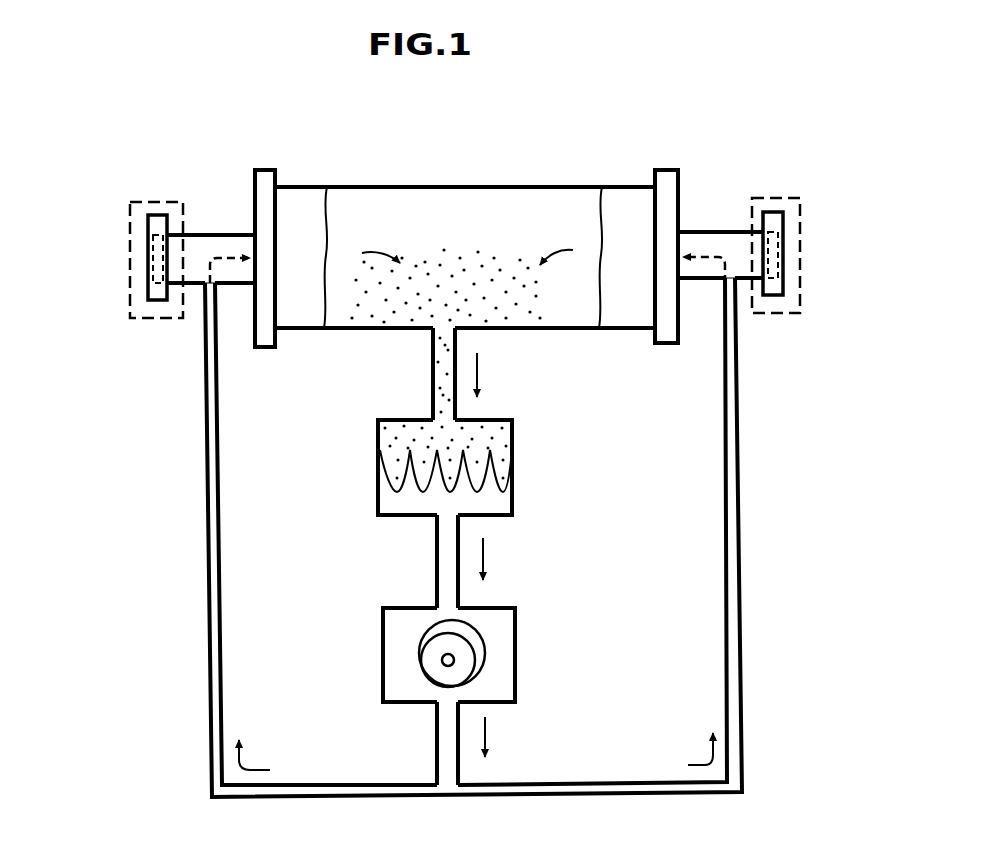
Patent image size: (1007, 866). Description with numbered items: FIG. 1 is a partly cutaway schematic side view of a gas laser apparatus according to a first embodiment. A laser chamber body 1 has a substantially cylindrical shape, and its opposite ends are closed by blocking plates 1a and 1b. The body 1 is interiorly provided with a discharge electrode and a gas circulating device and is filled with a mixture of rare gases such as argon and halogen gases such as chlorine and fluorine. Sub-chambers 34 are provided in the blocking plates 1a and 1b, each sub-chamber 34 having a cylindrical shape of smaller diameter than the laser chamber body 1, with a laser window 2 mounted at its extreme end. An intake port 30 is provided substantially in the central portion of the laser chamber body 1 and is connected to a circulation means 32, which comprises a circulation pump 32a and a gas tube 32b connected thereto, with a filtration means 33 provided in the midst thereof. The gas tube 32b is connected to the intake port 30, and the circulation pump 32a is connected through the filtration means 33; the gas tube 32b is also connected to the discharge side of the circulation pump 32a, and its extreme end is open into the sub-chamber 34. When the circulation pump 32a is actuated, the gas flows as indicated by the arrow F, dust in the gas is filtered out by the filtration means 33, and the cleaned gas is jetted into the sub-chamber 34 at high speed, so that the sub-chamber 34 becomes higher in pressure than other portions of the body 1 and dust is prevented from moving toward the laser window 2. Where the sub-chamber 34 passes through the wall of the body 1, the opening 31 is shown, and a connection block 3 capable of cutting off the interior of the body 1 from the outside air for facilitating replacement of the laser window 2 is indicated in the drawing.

The laser chamber body 1 is at (537, 187).
The blocking plate 1a is at (255, 345).
The blocking plate 1b is at (693, 330).
The laser window 2 is at (148, 257).
The connection block 3 is at (135, 318).
The intake port 30 is at (455, 330).
The opening in tank wall 31 is at (200, 290).
The circulation means 32 is at (528, 537).
The circulation pump 32a is at (515, 652).
The gas tube 32b is at (222, 598).
The filtration means 33 is at (512, 480).
The sub-chamber 34 is at (457, 250).
The arrow F is at (222, 257).